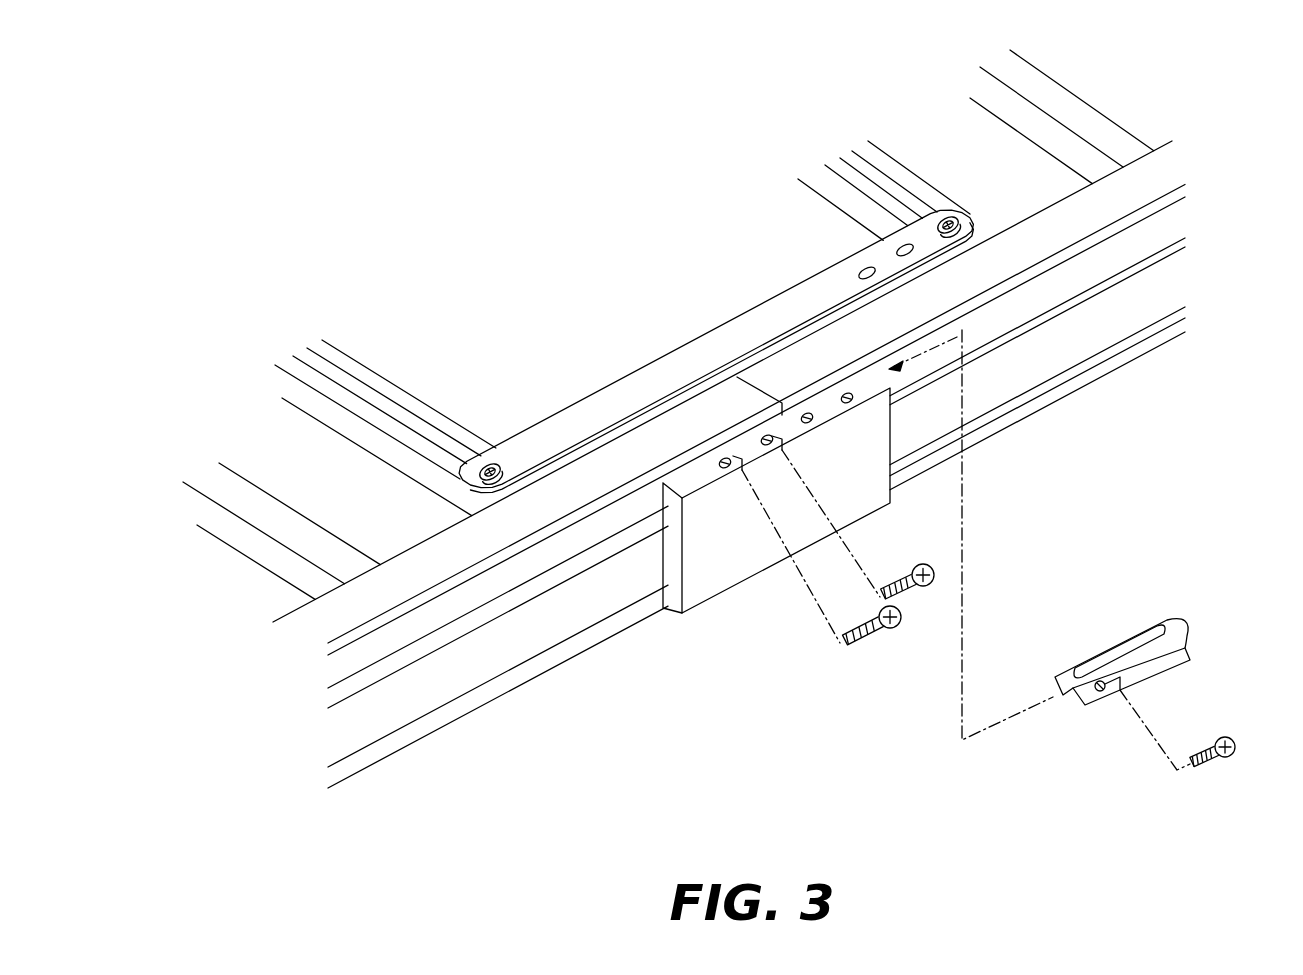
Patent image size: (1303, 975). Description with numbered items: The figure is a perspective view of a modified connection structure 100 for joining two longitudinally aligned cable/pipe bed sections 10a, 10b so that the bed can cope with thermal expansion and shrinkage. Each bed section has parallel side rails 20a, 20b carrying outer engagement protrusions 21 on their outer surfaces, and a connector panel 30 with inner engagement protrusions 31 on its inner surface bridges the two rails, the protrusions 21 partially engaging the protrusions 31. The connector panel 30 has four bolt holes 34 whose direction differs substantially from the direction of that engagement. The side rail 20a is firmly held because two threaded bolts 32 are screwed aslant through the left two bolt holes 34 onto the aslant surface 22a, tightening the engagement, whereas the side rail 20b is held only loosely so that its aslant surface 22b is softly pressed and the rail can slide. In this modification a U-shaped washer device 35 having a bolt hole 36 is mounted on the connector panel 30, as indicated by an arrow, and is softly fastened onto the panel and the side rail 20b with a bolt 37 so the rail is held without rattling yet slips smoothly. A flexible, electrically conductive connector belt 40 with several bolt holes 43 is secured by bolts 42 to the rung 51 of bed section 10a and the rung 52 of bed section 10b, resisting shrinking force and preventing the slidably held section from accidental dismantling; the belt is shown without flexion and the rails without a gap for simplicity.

The connection structure 100 is at (710, 284).
The cable/pipe bed section 10a is at (391, 768).
The cable/pipe bed section 10b is at (1148, 351).
The side rail 20a is at (459, 676).
The side rail 20b is at (1153, 304).
The outer engagement protrusion 21 is at (1133, 213).
The aslant surface 22a is at (528, 567).
The aslant surface 22b is at (983, 327).
The connector panel 30 is at (715, 570).
The inner engagement protrusion 31 is at (660, 481).
The threaded bolt 32 is at (923, 586).
The bolt hole 34 is at (742, 470).
The U-shaped washer device 35 is at (1165, 618).
The bolt hole 36 is at (1100, 693).
The bolt 37 is at (1232, 742).
The connector belt 40 is at (647, 378).
The bolt 42 is at (960, 215).
The bolt hole 43 is at (917, 219).
The rung 51 is at (373, 380).
The rung 52 is at (880, 156).